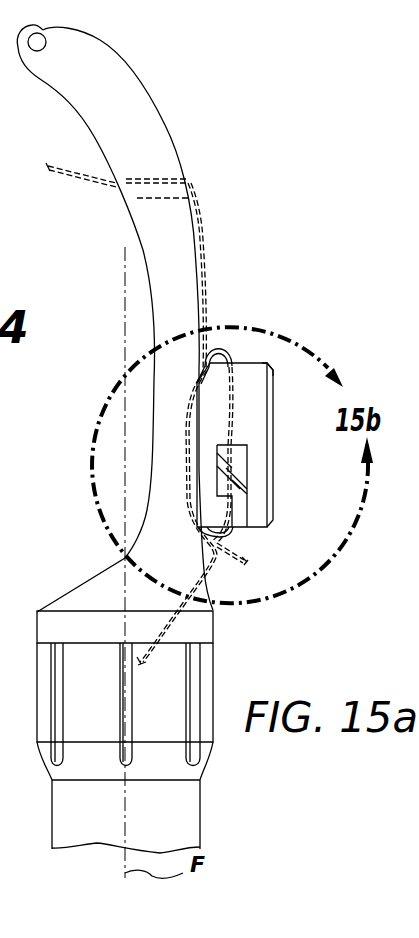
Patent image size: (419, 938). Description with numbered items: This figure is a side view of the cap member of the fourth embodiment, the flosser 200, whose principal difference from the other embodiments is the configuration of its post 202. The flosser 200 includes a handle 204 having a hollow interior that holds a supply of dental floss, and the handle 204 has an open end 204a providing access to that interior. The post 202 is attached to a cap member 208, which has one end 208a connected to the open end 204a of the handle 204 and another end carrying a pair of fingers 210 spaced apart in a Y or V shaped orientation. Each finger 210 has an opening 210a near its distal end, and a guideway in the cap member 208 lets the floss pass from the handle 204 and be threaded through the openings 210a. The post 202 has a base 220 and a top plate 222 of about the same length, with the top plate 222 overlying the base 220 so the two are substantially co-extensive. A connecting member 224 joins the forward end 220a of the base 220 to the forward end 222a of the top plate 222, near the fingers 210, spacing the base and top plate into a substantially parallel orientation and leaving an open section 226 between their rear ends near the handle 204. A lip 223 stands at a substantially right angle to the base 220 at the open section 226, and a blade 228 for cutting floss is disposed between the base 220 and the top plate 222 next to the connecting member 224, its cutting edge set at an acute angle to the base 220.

The flosser 200 is at (229, 283).
The post 202 is at (291, 355).
The handle 204 is at (170, 810).
The open end 204a is at (178, 647).
The cap member 208 is at (172, 119).
The end of cap member 208a is at (87, 623).
The finger 210 is at (89, 93).
The opening 210a is at (38, 42).
The base 220 is at (207, 430).
The forward end of base 220a is at (207, 382).
The top plate 222 is at (257, 430).
The forward end of top plate 222a is at (262, 358).
The lip 223 is at (226, 514).
The connecting member 224 is at (242, 366).
The open section 226 is at (243, 538).
The blade 228 is at (238, 468).